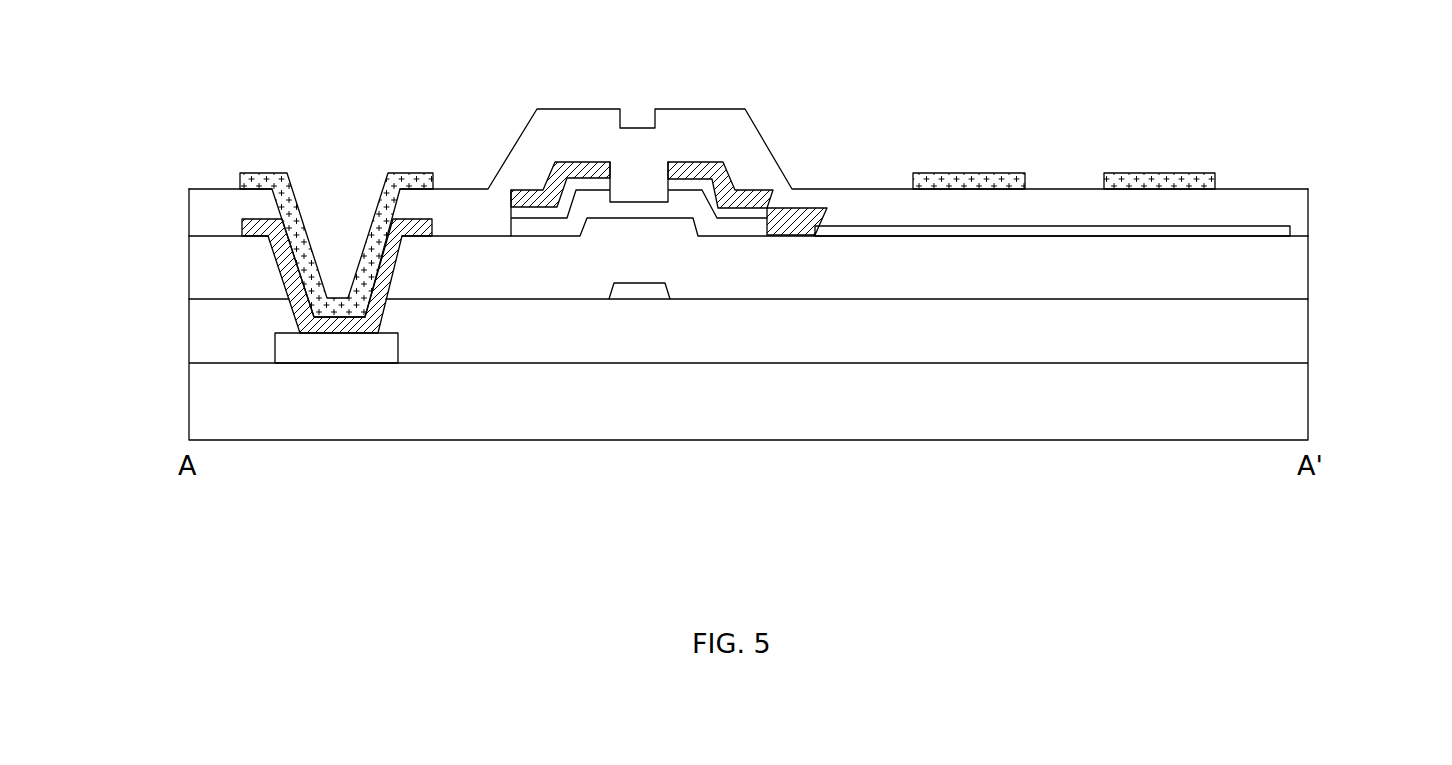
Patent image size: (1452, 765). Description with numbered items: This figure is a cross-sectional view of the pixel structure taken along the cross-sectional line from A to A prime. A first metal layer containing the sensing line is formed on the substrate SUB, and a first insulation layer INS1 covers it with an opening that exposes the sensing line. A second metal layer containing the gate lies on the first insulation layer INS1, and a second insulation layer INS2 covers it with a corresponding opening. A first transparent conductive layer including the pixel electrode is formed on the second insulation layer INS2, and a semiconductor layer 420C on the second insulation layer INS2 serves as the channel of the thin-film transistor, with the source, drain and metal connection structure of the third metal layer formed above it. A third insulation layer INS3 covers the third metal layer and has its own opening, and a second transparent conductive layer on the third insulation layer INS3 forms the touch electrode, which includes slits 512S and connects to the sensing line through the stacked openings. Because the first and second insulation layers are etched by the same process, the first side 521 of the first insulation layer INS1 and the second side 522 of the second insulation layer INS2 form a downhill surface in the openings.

The second side 522 is at (395, 273).
The first side 521 is at (385, 316).
The semiconductor layer 420C is at (593, 203).
The slits 512S is at (1066, 155).
The third insulation layer INS3 is at (1297, 206).
The second insulation layer INS2 is at (1297, 272).
The first insulation layer INS1 is at (1297, 330).
The substrate SUB is at (1297, 400).